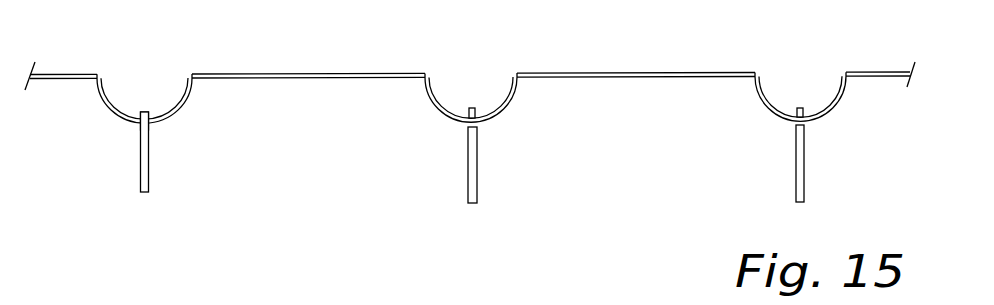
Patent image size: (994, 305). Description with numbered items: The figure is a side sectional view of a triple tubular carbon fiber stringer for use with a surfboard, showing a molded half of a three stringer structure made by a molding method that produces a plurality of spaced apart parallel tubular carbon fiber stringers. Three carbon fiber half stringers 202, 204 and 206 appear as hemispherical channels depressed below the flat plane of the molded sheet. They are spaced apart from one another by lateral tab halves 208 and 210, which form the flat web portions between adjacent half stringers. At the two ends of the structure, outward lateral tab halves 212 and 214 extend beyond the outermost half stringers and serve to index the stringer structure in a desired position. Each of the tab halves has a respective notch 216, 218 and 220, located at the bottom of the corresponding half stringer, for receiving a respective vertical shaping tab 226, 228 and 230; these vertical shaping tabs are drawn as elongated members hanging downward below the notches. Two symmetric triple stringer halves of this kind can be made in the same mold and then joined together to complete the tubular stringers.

The carbon fiber half stringer 202 is at (115, 83).
The carbon fiber half stringer 204 is at (443, 83).
The carbon fiber half stringer 206 is at (773, 82).
The lateral tab half 208 is at (308, 73).
The lateral tab half 210 is at (622, 72).
The outward lateral tab half 212 is at (65, 74).
The outward lateral tab half 214 is at (882, 72).
The notch 216 is at (146, 112).
The notch 218 is at (474, 108).
The notch 220 is at (801, 108).
The vertical shaping tab 226 is at (148, 163).
The vertical shaping tab 228 is at (478, 162).
The vertical shaping tab 230 is at (807, 160).